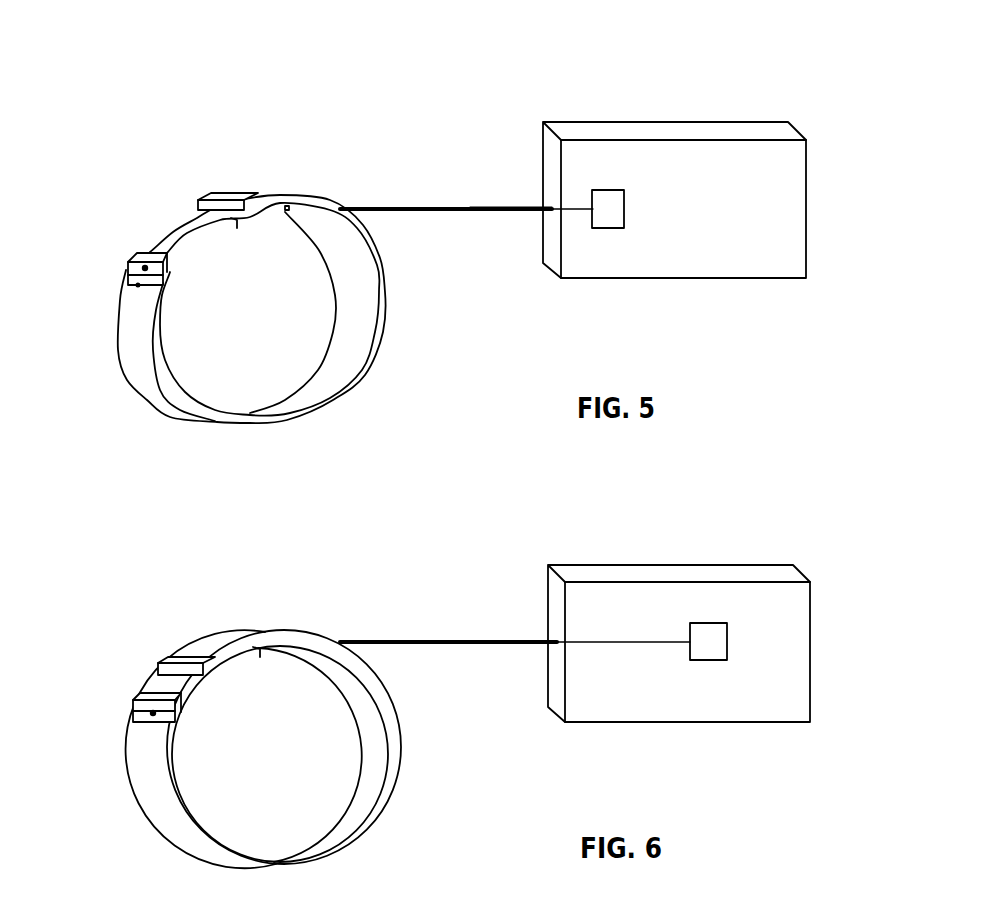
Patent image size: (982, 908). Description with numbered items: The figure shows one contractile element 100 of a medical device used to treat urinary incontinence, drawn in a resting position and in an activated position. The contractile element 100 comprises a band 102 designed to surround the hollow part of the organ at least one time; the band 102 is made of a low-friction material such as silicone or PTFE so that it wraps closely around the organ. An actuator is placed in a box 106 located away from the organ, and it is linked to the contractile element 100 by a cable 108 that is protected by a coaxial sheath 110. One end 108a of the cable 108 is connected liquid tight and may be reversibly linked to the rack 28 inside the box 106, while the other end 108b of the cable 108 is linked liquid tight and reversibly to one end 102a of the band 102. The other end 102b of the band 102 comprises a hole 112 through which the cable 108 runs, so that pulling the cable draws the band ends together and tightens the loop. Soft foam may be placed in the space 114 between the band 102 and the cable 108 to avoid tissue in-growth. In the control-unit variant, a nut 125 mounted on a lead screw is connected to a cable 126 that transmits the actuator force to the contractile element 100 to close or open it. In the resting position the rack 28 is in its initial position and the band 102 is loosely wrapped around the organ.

In FIG. 5, the contractile element 100 is at (237, 137).
In FIG. 5, the band 102 is at (155, 390).
In FIG. 6, the band 102 is at (263, 687).
In FIG. 5, the end of band 102a is at (158, 240).
In FIG. 6, the end of band 102a is at (235, 658).
In FIG. 5, the other end of band 102b is at (327, 203).
In FIG. 6, the other end of band 102b is at (210, 643).
In FIG. 5, the box 106 is at (598, 132).
In FIG. 6, the box 106 is at (638, 568).
In FIG. 5, the cable 108 is at (177, 222).
In FIG. 6, the cable 108 is at (369, 651).
In FIG. 5, the end of cable 108a is at (583, 208).
In FIG. 6, the end of cable 108a is at (685, 642).
In FIG. 5, the other end of cable 108b is at (138, 283).
In FIG. 6, the other end of cable 108b is at (153, 713).
In FIG. 5, the coaxial sheath 110 is at (477, 210).
In FIG. 5, the hole 112 is at (287, 210).
In FIG. 6, the space 114 is at (140, 668).
In FIG. 5, the nut 125 is at (608, 200).
In FIG. 6, the nut 125 is at (767, 574).
In FIG. 5, the rack 28 is at (714, 134).
In FIG. 6, the rack 28 is at (708, 643).
In FIG. 5, the cable 126 is at (443, 207).
In FIG. 6, the cable 126 is at (455, 640).